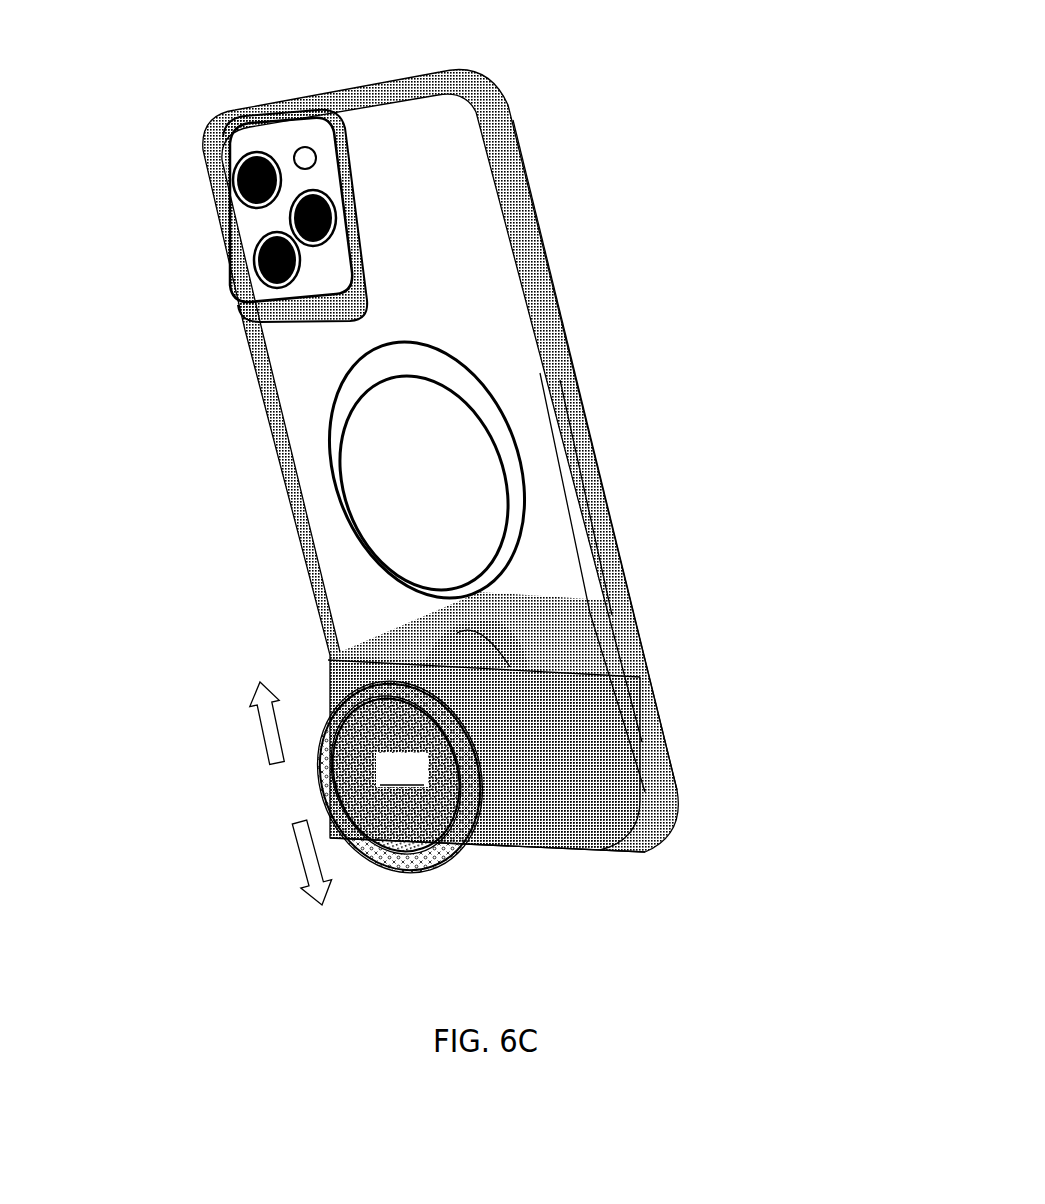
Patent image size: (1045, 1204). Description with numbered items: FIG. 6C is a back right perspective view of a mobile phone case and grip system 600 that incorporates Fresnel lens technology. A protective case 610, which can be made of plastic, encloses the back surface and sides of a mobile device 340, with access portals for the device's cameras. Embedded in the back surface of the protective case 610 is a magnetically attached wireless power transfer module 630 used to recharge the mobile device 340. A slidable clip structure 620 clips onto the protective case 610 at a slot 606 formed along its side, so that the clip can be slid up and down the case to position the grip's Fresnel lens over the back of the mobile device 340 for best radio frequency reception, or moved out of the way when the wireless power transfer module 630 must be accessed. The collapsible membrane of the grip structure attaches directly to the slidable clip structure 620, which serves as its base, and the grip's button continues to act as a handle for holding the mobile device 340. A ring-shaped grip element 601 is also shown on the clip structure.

The mobile phone case and grip system 600 is at (437, 472).
The mobile device 340 is at (278, 218).
The protective case 610 is at (283, 382).
The wireless power transfer module 630 is at (512, 465).
The slot 606 is at (598, 578).
The slidable clip structure 620 is at (607, 782).
The rotatable ring grip 601 is at (417, 857).